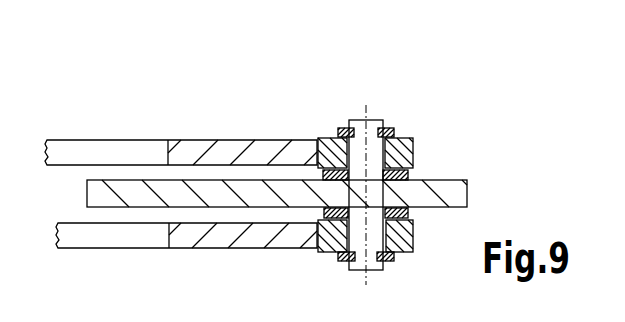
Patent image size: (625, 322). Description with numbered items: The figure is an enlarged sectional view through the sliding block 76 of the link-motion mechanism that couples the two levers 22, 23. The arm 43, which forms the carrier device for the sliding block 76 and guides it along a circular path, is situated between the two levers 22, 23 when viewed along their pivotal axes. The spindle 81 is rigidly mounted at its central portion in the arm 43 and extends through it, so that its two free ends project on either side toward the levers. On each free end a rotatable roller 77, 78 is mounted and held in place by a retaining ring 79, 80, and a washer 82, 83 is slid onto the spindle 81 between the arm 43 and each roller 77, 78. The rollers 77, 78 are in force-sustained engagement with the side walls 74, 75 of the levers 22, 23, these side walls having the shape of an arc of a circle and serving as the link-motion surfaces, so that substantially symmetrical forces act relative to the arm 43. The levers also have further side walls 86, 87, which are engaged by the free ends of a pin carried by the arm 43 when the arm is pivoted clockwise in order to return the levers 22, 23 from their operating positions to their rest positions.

The lever 22 is at (85, 242).
The lever 23 is at (88, 147).
The arm 43 is at (102, 193).
The side wall 74 is at (318, 237).
The side wall 75 is at (318, 144).
The sliding block 76 is at (407, 123).
The rotatable roller 77 is at (407, 253).
The rotatable roller 78 is at (405, 150).
The retaining ring 79 is at (342, 262).
The retaining ring 80 is at (392, 128).
The spindle 81 is at (370, 124).
The washer 82 is at (407, 212).
The washer 83 is at (407, 175).
The side wall 86 is at (168, 230).
The side wall 87 is at (168, 158).